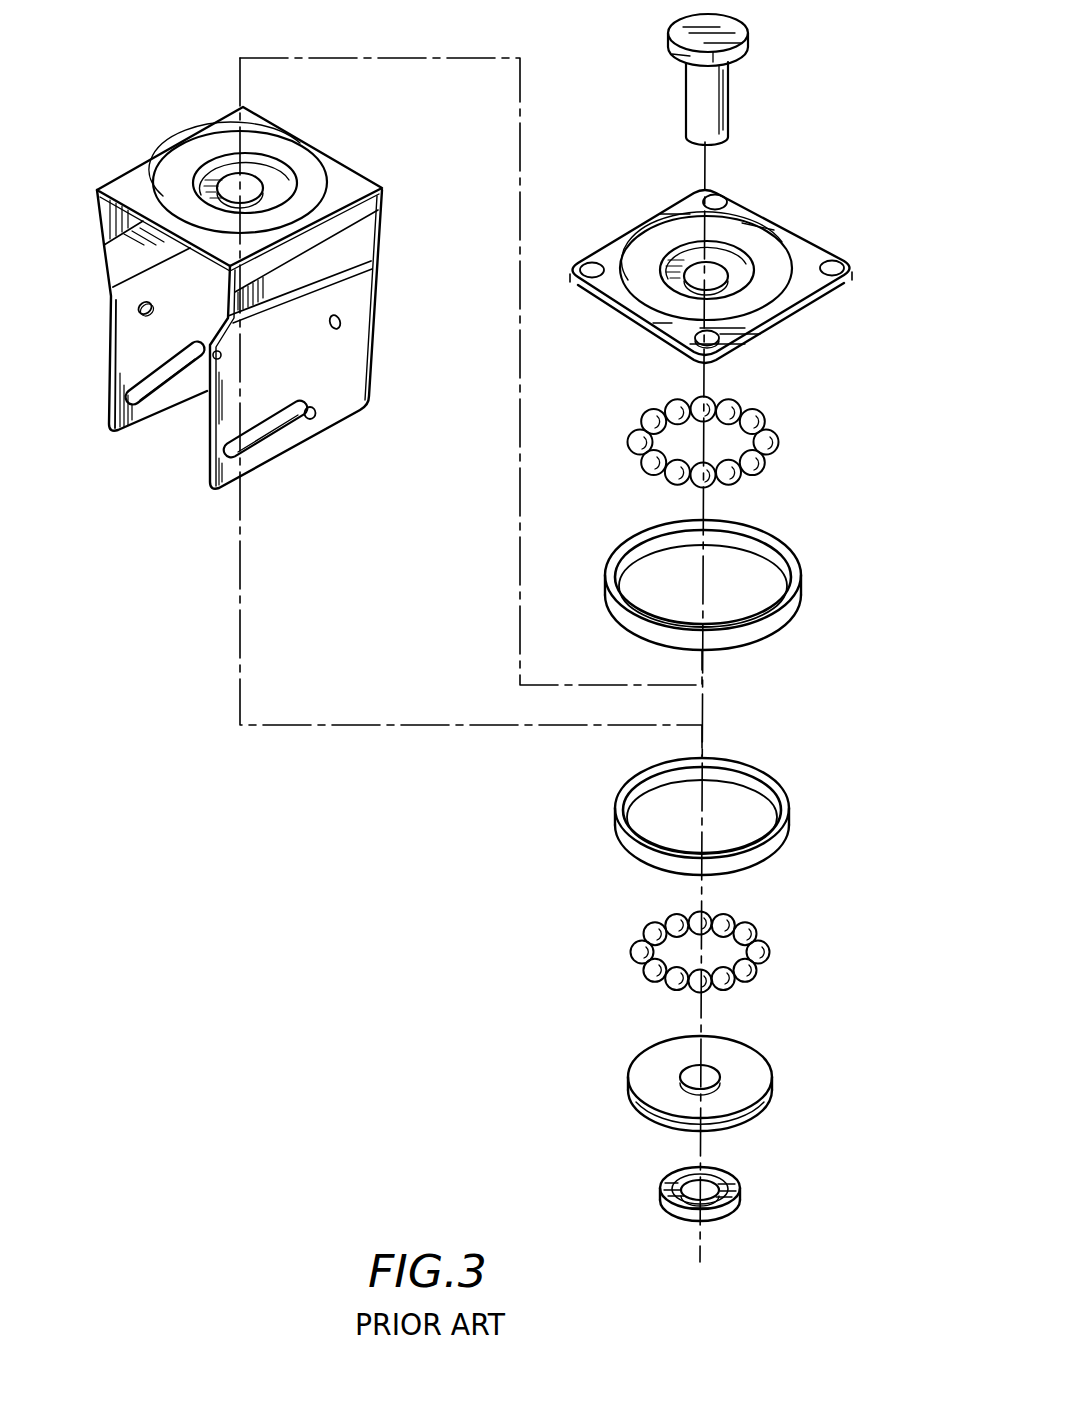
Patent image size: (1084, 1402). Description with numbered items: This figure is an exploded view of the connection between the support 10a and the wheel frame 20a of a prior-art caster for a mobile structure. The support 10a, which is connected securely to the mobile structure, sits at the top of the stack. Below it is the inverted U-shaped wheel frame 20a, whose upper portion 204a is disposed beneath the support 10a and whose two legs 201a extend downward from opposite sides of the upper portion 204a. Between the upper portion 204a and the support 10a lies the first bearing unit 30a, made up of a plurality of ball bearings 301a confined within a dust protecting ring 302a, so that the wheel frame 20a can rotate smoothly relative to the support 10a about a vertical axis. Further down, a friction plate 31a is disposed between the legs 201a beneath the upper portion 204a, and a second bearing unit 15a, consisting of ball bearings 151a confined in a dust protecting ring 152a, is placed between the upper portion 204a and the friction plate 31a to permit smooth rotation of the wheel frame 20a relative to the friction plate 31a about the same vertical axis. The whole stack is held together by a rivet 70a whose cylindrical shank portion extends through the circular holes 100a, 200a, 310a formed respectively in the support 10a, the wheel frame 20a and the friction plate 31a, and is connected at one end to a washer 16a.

The wheel frame 20a is at (230, 283).
The upper portion 204a is at (133, 183).
The circular hole 200a is at (260, 182).
The legs 201a is at (226, 420).
The rivet 70a is at (750, 33).
The support 10a is at (711, 248).
The circular hole 100a is at (733, 258).
The first bearing unit 30a is at (758, 524).
The ball bearings 301a is at (808, 415).
The dust protecting ring 302a is at (773, 533).
The second bearing unit 15a is at (757, 875).
The dust protecting ring 152a is at (773, 852).
The ball bearings 151a is at (751, 952).
The friction plate 31a is at (745, 1069).
The circular hole 310a is at (708, 1067).
The washer 16a is at (737, 1176).